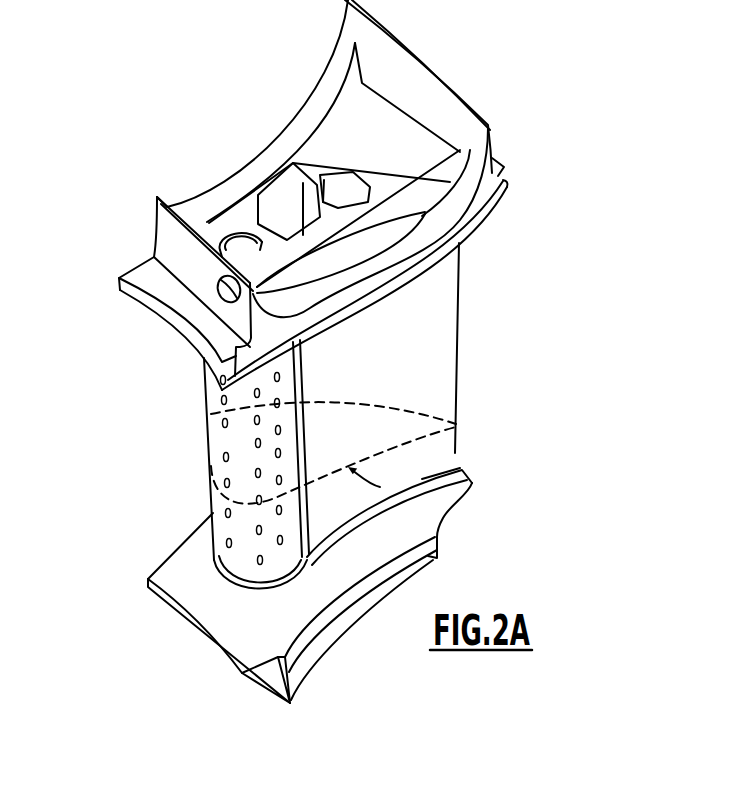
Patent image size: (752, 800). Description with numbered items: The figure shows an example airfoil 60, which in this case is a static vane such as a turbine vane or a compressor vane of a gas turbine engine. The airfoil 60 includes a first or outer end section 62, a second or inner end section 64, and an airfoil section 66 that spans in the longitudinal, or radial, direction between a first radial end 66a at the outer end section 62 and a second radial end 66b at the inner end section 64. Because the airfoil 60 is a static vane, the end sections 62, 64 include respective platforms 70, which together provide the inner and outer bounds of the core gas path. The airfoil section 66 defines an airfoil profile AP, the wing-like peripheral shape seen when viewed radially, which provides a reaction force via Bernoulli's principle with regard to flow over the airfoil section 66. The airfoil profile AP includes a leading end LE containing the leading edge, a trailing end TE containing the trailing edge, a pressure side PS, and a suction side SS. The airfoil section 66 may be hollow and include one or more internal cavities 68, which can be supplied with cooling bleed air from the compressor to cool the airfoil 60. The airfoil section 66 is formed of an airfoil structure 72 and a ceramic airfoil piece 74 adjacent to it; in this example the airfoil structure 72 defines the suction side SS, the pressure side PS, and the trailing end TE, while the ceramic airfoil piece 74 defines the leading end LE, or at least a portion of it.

The airfoil 60 is at (317, 363).
The first or outer end section 62 is at (348, 195).
The second or inner end section 64 is at (429, 521).
The airfoil section 66 is at (350, 416).
The first radial end 66a is at (434, 267).
The second radial end 66b is at (473, 473).
The internal cavities 68 is at (248, 239).
The platforms 70 is at (482, 219).
The airfoil structure 72 is at (406, 329).
The ceramic airfoil piece 74 is at (235, 416).
The leading end LE is at (203, 474).
The trailing end TE is at (470, 347).
The suction side SS is at (322, 396).
The pressure side PS is at (456, 456).
The airfoil profile AP is at (428, 434).